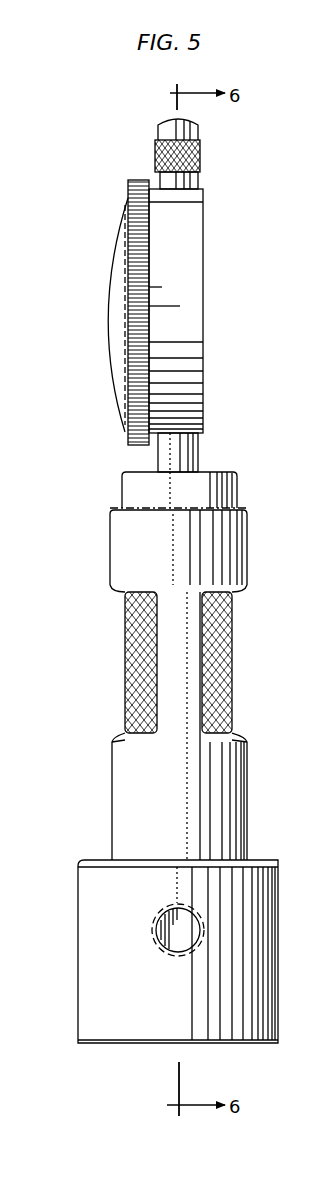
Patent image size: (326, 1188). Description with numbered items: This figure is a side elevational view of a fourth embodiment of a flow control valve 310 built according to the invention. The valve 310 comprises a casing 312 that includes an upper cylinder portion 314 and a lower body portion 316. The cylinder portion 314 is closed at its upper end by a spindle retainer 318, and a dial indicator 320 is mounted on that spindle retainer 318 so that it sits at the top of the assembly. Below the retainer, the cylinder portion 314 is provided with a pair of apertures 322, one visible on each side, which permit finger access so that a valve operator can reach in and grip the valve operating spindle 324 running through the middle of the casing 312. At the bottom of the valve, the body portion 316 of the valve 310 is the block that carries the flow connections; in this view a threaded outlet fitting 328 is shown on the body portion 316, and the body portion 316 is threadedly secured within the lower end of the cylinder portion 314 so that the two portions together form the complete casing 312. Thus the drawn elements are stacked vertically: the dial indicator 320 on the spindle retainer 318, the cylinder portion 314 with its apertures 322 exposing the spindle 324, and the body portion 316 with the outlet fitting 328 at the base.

The flow control valve 310 is at (145, 295).
The casing 312 is at (152, 770).
The cylinder portion 314 is at (223, 553).
The body portion 316 is at (178, 978).
The spindle retainer 318 is at (213, 482).
The dial indicator 320 is at (192, 268).
The apertures 322 is at (122, 735).
The valve operating spindle 324 is at (125, 635).
The threaded outlet fitting 328 is at (178, 956).